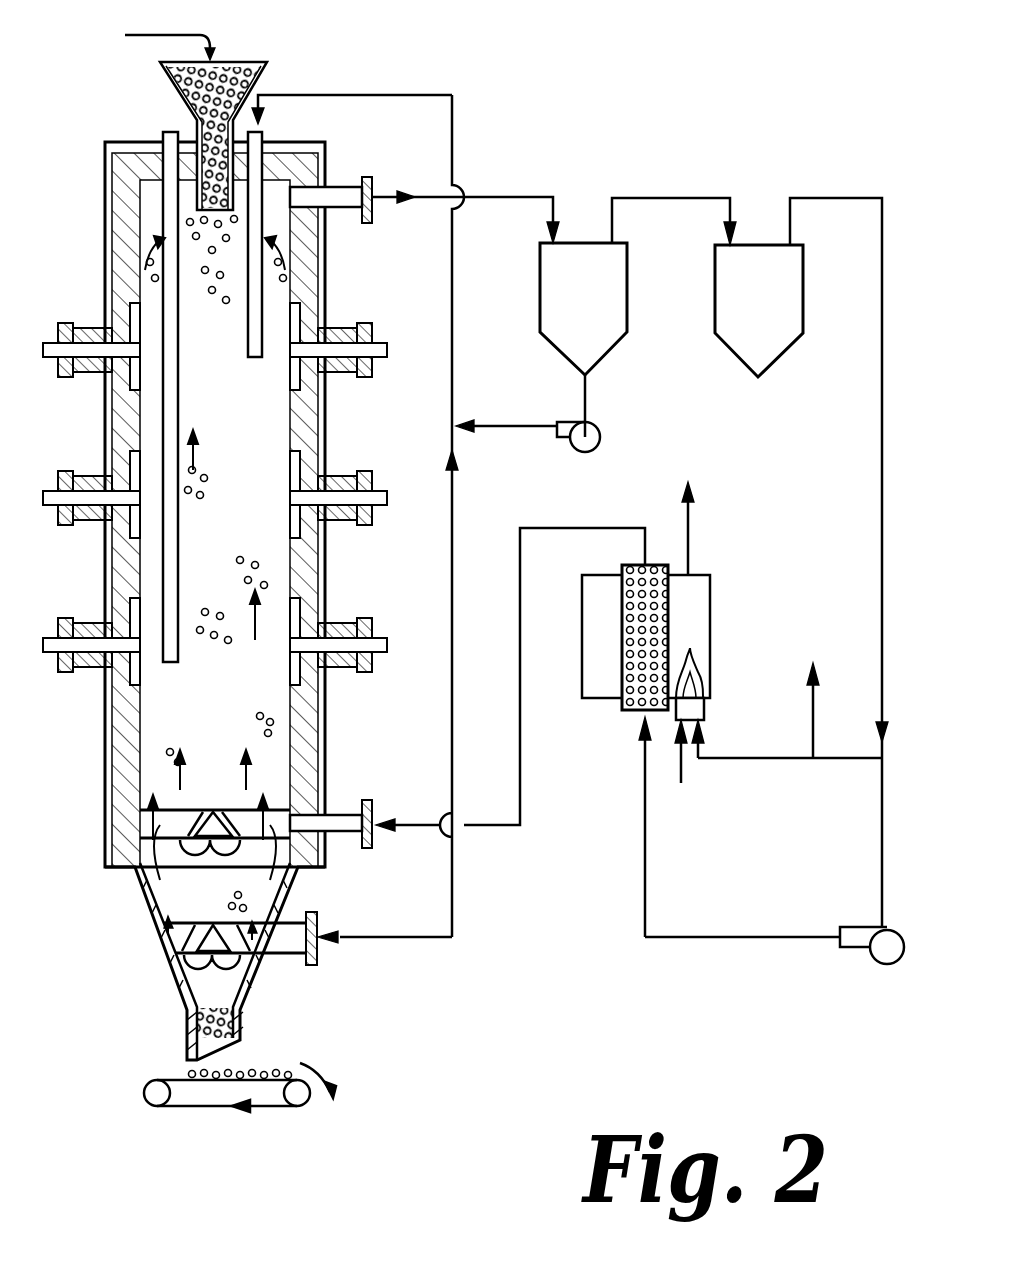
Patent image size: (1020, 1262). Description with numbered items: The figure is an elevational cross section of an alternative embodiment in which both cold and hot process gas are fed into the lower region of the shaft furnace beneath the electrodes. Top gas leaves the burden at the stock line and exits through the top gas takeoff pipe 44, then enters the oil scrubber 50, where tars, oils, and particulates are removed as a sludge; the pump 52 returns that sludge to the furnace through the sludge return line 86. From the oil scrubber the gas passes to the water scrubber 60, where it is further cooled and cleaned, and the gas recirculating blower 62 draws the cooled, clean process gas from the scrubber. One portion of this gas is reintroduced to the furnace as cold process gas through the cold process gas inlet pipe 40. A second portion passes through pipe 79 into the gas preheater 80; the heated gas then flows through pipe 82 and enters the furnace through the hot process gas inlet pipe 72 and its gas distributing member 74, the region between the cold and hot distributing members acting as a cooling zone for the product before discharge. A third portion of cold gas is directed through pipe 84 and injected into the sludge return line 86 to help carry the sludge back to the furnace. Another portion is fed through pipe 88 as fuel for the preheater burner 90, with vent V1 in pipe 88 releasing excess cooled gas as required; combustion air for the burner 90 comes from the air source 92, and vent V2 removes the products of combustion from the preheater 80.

The cold process gas inlet pipe 40 is at (302, 912).
The top gas takeoff pipe 44 is at (337, 187).
The oil scrubber 50 is at (601, 353).
The pump 52 is at (600, 443).
The water scrubber 60 is at (787, 355).
The gas recirculating blower 62 is at (872, 966).
The hot process gas inlet pipe 72 is at (342, 805).
The gas distributing member 74 is at (195, 805).
The pipe 79 is at (645, 865).
The gas preheater 80 is at (712, 620).
The pipe 82 is at (521, 766).
The pipe 84 is at (452, 500).
The sludge return line 86 is at (453, 384).
The pipe 88 is at (790, 760).
The preheater burner 90 is at (705, 712).
The air source 92 is at (681, 783).
The vent V1 is at (817, 718).
The vent V2 is at (692, 546).